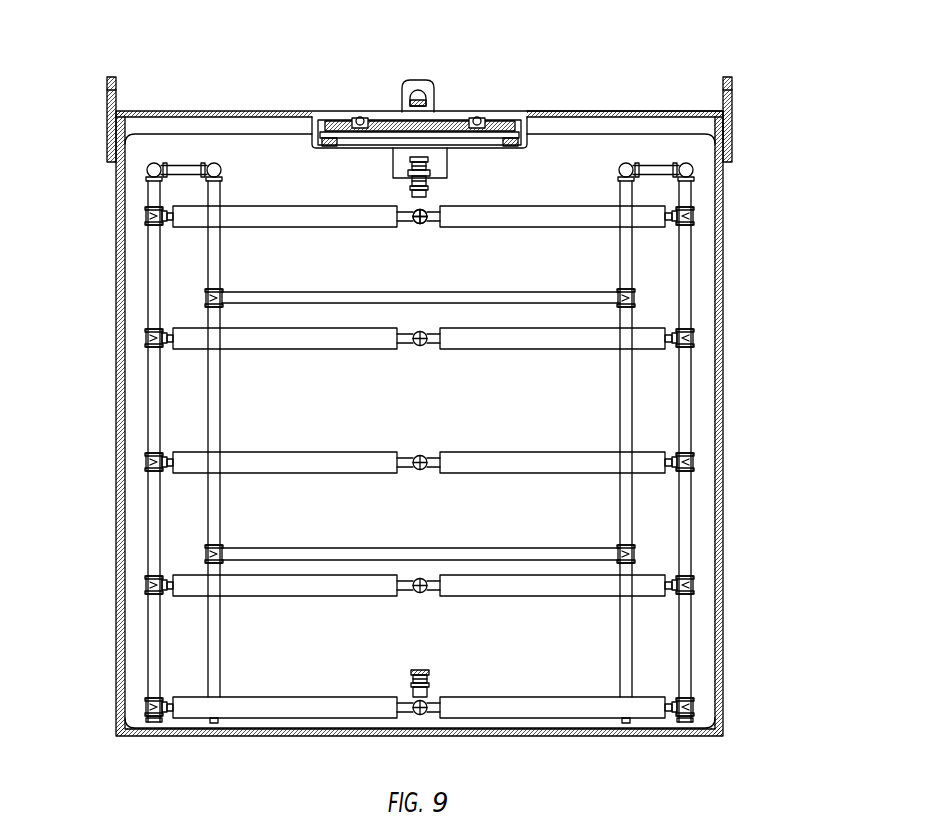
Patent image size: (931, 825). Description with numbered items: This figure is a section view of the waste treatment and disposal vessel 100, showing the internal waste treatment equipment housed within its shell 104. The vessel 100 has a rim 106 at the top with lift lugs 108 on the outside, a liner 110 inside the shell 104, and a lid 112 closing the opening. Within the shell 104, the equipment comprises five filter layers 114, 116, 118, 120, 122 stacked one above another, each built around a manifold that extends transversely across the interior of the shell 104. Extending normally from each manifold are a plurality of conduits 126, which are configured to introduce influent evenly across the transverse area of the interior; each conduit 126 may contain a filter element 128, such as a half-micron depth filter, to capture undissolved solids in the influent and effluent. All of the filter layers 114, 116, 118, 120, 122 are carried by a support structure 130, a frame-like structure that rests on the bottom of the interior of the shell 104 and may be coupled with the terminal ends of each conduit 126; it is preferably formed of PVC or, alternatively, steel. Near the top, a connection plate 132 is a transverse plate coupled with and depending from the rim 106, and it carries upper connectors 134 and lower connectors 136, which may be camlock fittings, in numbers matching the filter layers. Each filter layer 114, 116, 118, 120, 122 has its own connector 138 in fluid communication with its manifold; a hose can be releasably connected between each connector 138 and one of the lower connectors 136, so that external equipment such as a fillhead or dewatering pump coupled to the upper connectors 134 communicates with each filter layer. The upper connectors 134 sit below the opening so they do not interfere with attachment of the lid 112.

The waste treatment and disposal vessel 100 is at (416, 368).
The shell 104 is at (723, 410).
The rim 106 is at (528, 124).
The lift lugs 108 is at (108, 143).
The liner 110 is at (716, 122).
The lid 112 is at (393, 121).
The filter layer 114 is at (698, 217).
The filter layer 116 is at (698, 339).
The filter layer 118 is at (698, 463).
The filter layer 120 is at (698, 586).
The filter layer 122 is at (698, 708).
The conduits 126 is at (409, 341).
The filter element 128 is at (300, 343).
The support structure 130 is at (147, 549).
The connection plate 132 is at (449, 159).
The upper connectors 134 is at (421, 156).
The lower connectors 136 is at (433, 207).
The connector 138 is at (433, 675).